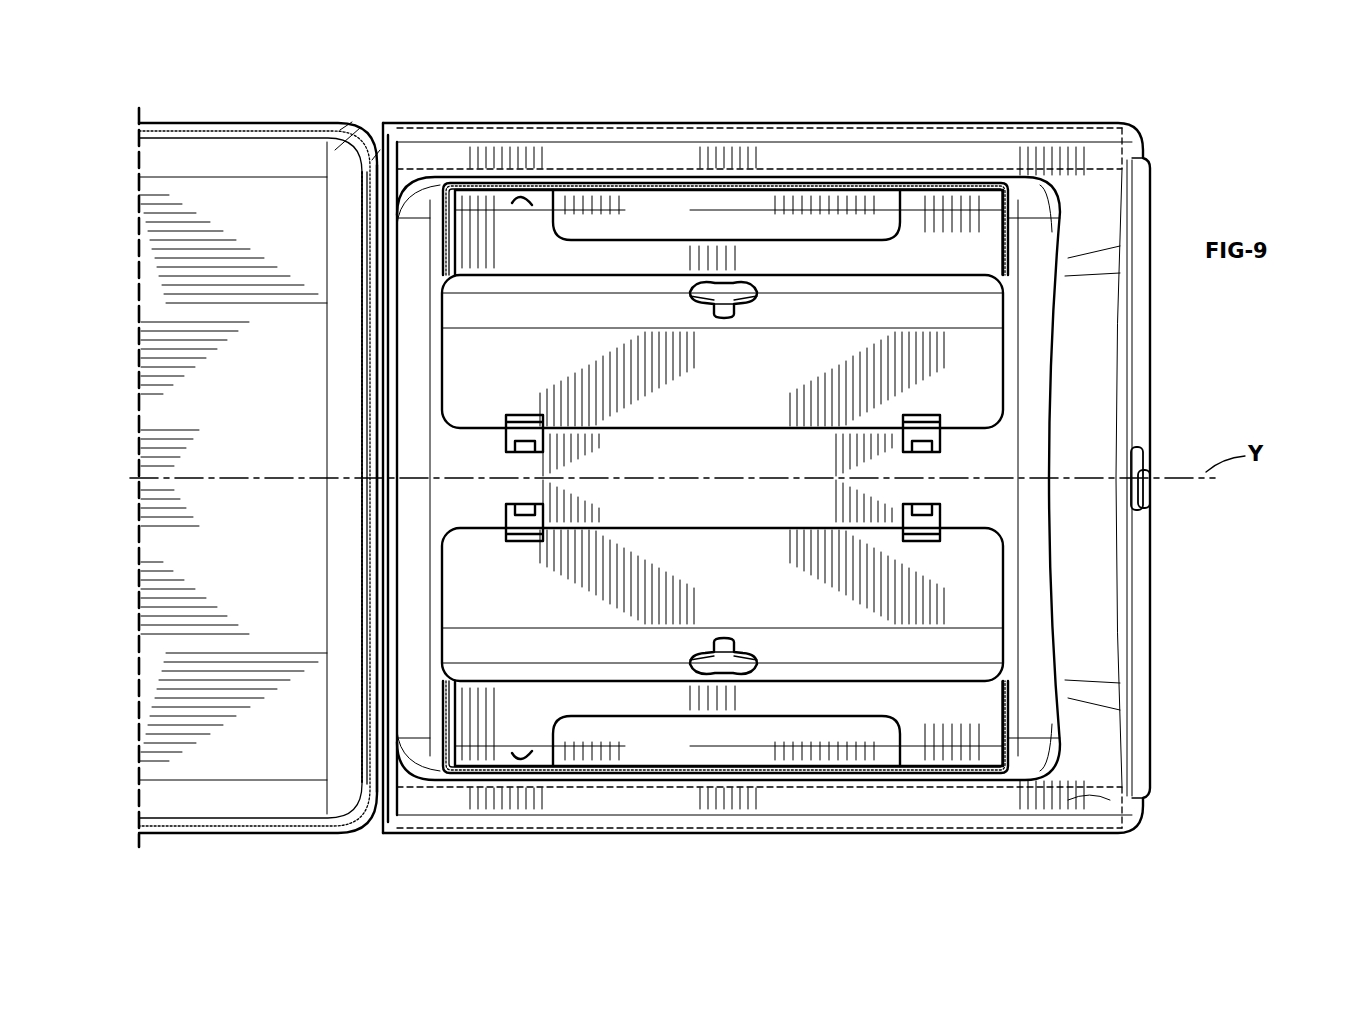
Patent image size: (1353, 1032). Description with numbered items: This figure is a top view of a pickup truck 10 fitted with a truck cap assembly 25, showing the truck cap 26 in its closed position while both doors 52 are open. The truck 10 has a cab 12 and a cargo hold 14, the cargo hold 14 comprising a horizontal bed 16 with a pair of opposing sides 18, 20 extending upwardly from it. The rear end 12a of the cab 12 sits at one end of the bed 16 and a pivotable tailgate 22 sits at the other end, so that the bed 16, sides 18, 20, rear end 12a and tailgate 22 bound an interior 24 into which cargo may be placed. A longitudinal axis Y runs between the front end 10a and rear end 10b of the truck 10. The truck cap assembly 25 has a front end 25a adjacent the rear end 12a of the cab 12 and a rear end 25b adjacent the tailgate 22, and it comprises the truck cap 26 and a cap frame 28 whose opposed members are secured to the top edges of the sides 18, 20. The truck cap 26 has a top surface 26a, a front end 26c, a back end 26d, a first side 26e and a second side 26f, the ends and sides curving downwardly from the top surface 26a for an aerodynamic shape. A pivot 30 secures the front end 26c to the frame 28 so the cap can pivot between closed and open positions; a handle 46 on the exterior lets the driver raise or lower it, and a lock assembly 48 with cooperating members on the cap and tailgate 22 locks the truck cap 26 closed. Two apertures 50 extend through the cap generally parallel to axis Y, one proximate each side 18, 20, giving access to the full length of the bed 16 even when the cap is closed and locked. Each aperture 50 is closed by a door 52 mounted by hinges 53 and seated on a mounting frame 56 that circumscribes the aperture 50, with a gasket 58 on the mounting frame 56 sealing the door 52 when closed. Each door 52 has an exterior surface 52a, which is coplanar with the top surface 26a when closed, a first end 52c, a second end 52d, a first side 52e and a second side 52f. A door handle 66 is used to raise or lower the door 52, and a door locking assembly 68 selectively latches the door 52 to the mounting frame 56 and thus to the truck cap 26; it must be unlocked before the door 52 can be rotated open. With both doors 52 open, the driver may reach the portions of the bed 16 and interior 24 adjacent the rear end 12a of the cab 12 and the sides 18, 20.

The pickup truck 10 is at (1210, 113).
The front end 10a is at (118, 138).
The rear end 10b is at (1168, 695).
The cab 12 is at (212, 778).
The rear end of cab 12a is at (378, 456).
The cargo hold 14 is at (375, 838).
The bed 16 is at (936, 257).
The side 18 is at (1000, 840).
The side 20 is at (1050, 115).
The tailgate 22 is at (1162, 627).
The interior 24 is at (956, 242).
The truck cap assembly 25 is at (1150, 828).
The front end 25a is at (356, 392).
The rear end 25b is at (1165, 397).
The truck cap 26 is at (1105, 757).
The top surface 26a is at (808, 464).
The front end 26c is at (410, 565).
The back end 26d is at (1137, 540).
The first side 26e is at (610, 820).
The second side 26f is at (626, 136).
The cap frame 28 is at (766, 128).
The pivot 30 is at (383, 427).
The handle 46 is at (1198, 485).
The lock assembly 48 is at (1160, 495).
The aperture 50 is at (516, 200).
The door 52 is at (774, 478).
The exterior surface 52a is at (750, 389).
The first end 52c is at (443, 350).
The second end 52d is at (1005, 362).
The first side 52e is at (648, 275).
The second side 52f is at (730, 430).
The hinge 53 is at (520, 416).
The mounting frame 56 is at (776, 427).
The gasket 58 is at (450, 262).
The door handle 66 is at (767, 478).
The door locking assembly 68 is at (730, 325).